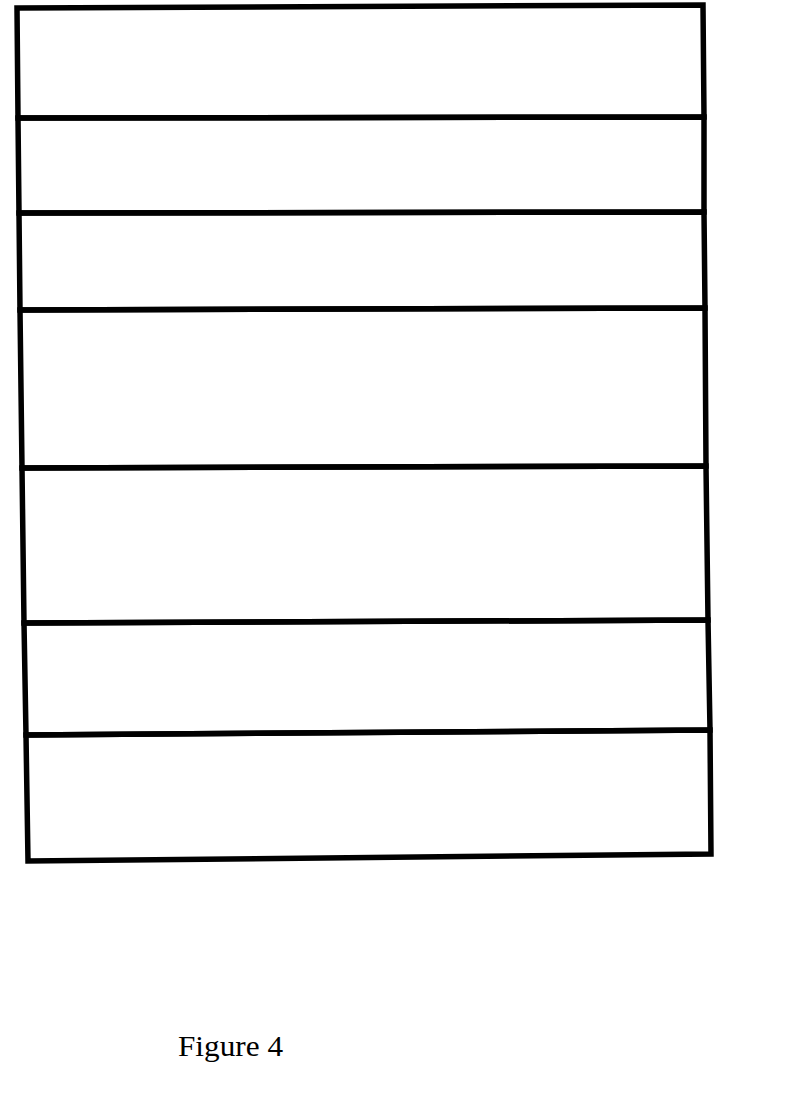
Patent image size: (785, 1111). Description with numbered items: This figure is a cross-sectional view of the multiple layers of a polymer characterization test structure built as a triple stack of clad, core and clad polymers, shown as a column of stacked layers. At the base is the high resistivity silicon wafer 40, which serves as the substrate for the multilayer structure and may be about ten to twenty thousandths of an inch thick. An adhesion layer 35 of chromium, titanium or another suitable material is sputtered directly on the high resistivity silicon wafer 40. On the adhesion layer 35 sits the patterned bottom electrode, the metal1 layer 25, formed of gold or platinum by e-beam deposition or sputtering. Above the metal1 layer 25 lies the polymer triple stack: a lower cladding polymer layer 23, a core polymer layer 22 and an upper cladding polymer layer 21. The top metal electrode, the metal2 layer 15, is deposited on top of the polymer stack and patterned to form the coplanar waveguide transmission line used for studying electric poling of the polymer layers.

The top metal electrode (metal2) 15 is at (376, 106).
The cladding polymer layer 21 is at (376, 200).
The core polymer layer 22 is at (378, 295).
The cladding polymer layer 23 is at (381, 422).
The bottom electrode (metal1 layer) 25 is at (393, 578).
The adhesion layer 35 is at (349, 721).
The high resistivity silicon wafer 40 is at (394, 823).